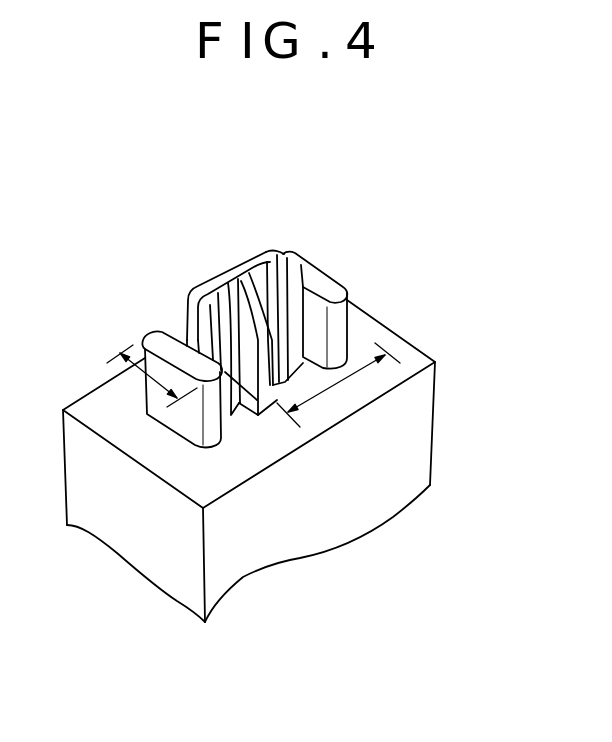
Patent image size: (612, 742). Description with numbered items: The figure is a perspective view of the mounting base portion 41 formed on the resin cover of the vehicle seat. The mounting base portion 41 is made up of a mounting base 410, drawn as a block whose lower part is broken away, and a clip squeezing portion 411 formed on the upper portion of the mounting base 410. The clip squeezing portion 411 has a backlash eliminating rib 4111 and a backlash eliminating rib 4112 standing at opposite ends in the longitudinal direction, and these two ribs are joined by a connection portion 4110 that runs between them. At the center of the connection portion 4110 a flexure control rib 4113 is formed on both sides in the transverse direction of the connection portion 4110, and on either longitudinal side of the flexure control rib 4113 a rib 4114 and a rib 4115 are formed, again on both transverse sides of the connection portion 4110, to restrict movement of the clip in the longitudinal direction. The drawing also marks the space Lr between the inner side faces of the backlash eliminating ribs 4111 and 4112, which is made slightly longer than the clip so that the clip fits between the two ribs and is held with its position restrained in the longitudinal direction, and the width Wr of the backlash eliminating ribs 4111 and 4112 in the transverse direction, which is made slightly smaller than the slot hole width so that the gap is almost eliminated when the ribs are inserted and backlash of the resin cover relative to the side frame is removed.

The mounting base portion 41 is at (493, 158).
The mounting base 410 is at (414, 440).
The clip squeezing portion 411 is at (384, 152).
The connection portion 4110 is at (228, 278).
The backlash eliminating rib 4111 is at (157, 338).
The backlash eliminating rib 4112 is at (322, 280).
The flexure control rib 4113 is at (250, 285).
The rib for restricting movement in the longitudinal direction of the clip 4114 is at (220, 292).
The rib for restricting movement in the longitudinal direction of the clip 4115 is at (276, 255).